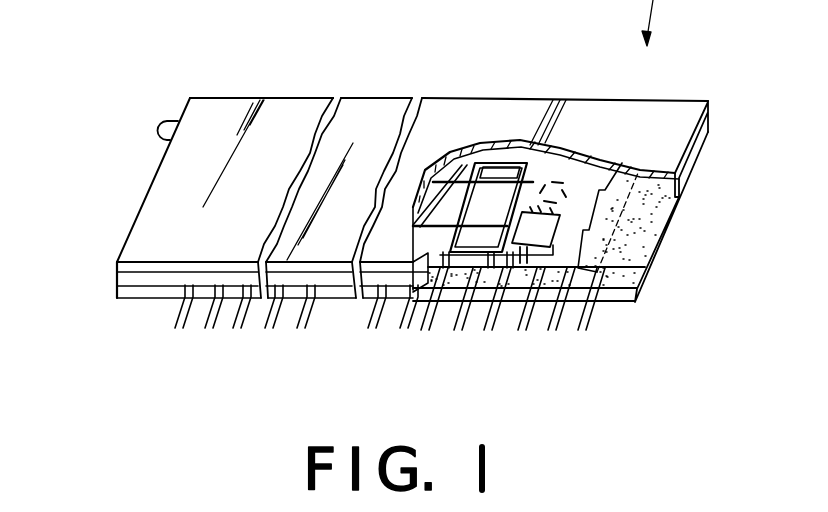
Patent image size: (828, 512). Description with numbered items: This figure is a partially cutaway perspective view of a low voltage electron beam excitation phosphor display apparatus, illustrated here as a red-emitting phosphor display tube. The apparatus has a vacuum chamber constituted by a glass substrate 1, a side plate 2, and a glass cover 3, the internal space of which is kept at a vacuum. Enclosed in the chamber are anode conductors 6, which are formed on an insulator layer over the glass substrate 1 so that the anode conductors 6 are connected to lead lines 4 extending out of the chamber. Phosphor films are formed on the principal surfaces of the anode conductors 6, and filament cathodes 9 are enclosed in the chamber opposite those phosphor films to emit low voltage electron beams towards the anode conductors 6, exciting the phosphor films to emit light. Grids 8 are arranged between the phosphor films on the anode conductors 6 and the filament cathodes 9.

The glass substrate 1 is at (635, 257).
The side plate 2 is at (708, 118).
The glass cover 3 is at (300, 115).
The lead lines 4 is at (466, 325).
The anode conductors 6 is at (557, 182).
The grids 8 is at (503, 165).
The filament cathodes 9 is at (488, 170).